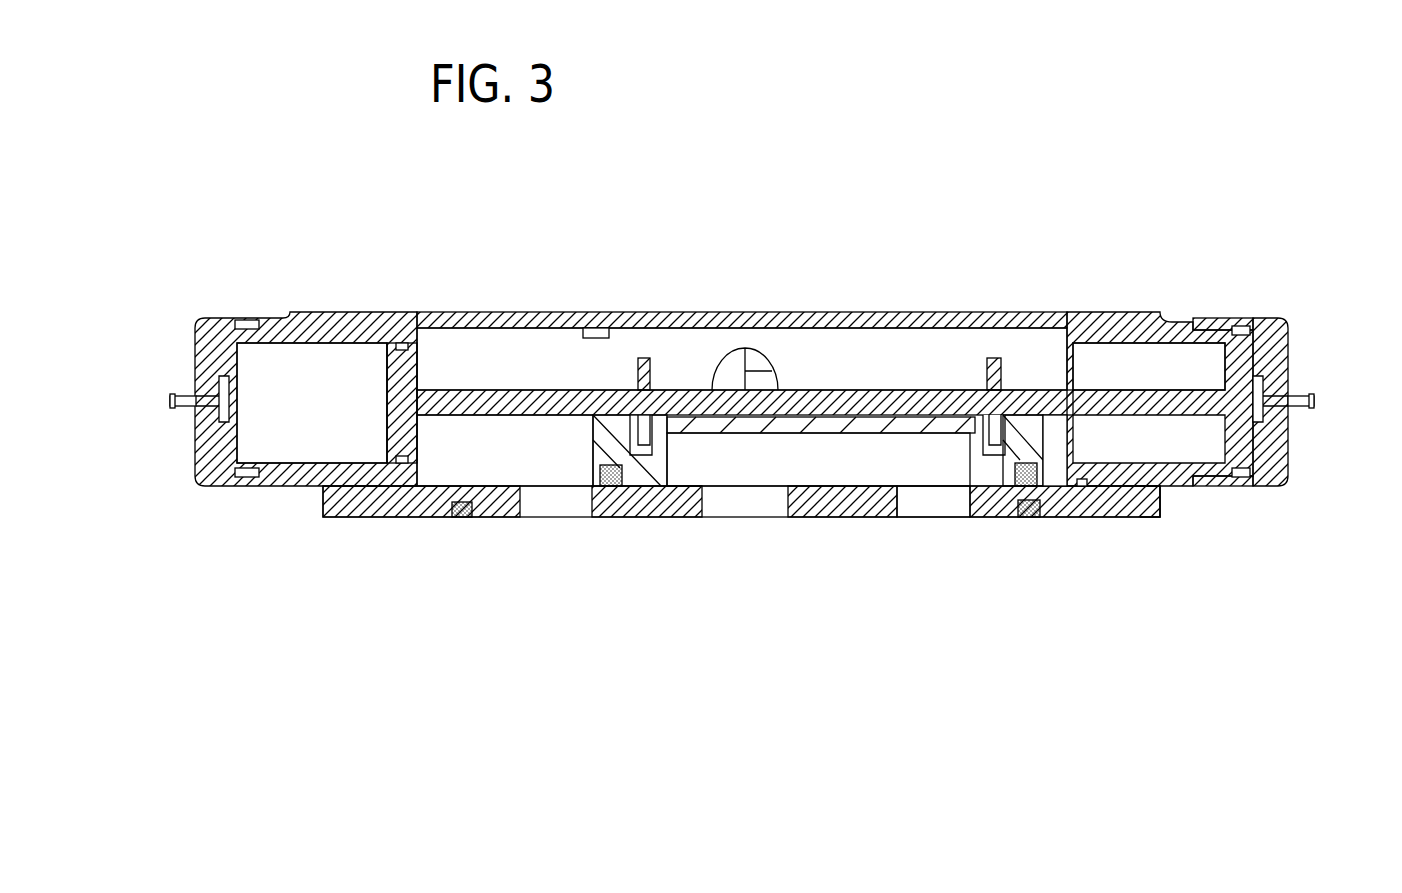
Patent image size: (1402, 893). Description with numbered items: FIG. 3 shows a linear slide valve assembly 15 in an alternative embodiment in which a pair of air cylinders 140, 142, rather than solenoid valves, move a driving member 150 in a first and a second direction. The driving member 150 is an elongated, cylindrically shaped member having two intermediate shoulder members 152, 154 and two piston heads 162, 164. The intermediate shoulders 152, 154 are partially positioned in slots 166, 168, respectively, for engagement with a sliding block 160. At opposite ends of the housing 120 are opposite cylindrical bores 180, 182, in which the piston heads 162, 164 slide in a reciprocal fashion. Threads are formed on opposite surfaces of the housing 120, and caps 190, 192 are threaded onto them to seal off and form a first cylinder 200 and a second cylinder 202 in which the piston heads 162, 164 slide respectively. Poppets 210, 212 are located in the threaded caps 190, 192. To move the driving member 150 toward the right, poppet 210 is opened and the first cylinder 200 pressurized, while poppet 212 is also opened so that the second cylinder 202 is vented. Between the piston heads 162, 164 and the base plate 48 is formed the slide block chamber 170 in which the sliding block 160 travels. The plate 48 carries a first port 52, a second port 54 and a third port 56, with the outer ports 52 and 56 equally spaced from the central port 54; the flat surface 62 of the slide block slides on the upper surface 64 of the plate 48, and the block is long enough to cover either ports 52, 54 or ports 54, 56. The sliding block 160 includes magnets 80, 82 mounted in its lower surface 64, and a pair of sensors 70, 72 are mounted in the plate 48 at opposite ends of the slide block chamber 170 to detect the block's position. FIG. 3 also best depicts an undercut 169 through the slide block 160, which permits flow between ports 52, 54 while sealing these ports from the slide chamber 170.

The linear slide valve assembly 15 is at (1088, 262).
The base plate 48 is at (1152, 518).
The first port 52 is at (946, 508).
The second port 54 is at (768, 503).
The third port 56 is at (520, 500).
The flat surface 62 is at (880, 478).
The upper surface 64 is at (688, 486).
The sensor 70 is at (1032, 518).
The sensor 72 is at (455, 518).
The magnet 80 is at (1037, 486).
The magnet 82 is at (620, 488).
The housing 120 is at (1140, 316).
The air cylinder 140 is at (1176, 320).
The air cylinder 142 is at (340, 320).
The driving member 150 is at (548, 390).
The intermediate shoulder member 152 is at (702, 390).
The intermediate shoulder member 154 is at (996, 440).
The sliding block 160 is at (608, 430).
The piston head 162 is at (393, 324).
The piston head 164 is at (1276, 318).
The slot 166 is at (637, 425).
The slot 168 is at (992, 440).
The undercut 169 is at (968, 446).
The slide block chamber 170 is at (926, 378).
The cylindrical bore 180 is at (288, 343).
The cylindrical bore 182 is at (1106, 343).
The cap 190 is at (218, 318).
The cap 192 is at (1290, 337).
The first cylinder 200 is at (264, 510).
The second cylinder 202 is at (1206, 510).
The poppet 210 is at (170, 405).
The poppet 212 is at (1315, 405).